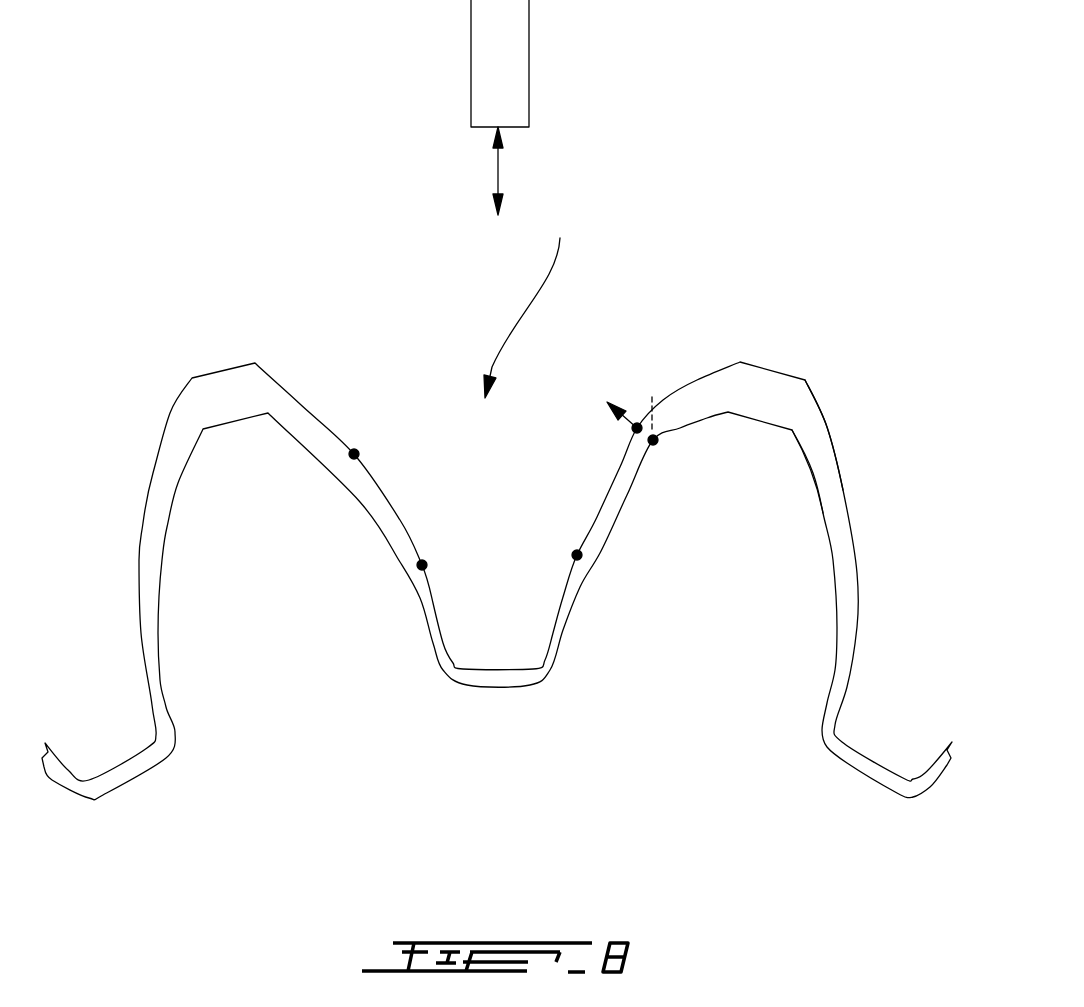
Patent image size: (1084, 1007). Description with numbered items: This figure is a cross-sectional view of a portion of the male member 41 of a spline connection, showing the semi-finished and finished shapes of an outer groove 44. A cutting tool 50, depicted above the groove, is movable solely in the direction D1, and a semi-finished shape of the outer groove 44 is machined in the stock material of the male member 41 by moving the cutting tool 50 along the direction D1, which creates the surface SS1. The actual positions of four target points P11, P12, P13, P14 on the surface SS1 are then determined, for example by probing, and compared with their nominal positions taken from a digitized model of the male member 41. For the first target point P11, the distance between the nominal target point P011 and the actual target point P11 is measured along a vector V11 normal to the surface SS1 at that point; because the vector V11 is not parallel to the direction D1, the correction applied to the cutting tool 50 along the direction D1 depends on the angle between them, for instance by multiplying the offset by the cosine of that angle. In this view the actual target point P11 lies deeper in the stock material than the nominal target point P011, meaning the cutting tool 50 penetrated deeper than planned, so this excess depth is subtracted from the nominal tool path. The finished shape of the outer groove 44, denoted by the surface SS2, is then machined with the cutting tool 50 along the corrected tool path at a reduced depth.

The male member 41 is at (285, 648).
The outer groove 44 is at (531, 303).
The cutting tool 50 is at (529, 57).
The direction D1 is at (496, 170).
The target point P14 is at (354, 454).
The target point P13 is at (422, 565).
The target point P12 is at (577, 555).
The first target point P11 is at (653, 440).
The nominal target point P011 is at (637, 428).
The vector V11 is at (630, 422).
The surface of the semi-finished shape SS1 is at (828, 425).
The finished surface SS2 is at (825, 512).